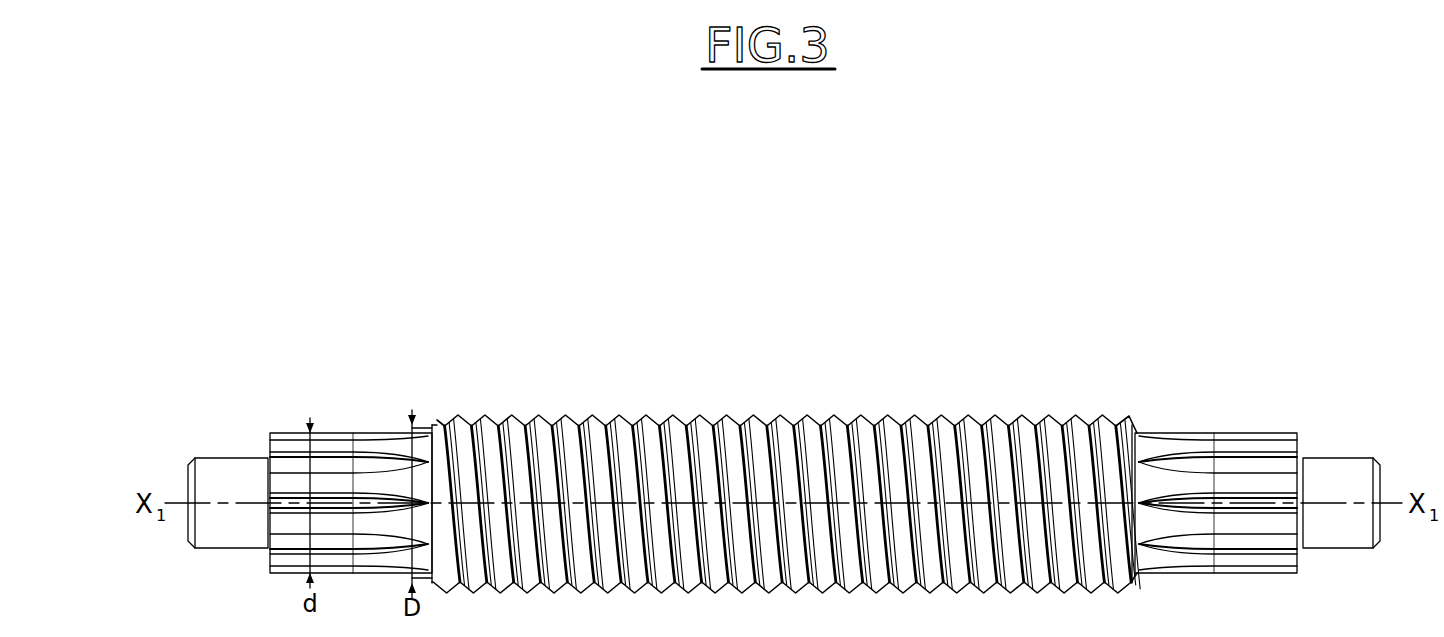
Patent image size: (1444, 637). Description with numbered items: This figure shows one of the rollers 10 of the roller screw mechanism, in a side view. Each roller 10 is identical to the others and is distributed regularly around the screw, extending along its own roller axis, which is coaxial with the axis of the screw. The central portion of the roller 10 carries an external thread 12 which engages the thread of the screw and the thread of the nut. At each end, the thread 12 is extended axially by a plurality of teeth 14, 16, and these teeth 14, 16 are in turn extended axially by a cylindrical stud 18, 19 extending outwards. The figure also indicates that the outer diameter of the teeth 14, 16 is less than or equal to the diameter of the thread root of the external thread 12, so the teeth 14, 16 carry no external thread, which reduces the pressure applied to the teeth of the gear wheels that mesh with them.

The roller 10 is at (1227, 330).
The external thread 12 is at (740, 421).
The teeth 14 is at (343, 441).
The teeth 16 is at (1153, 438).
The cylindrical stud 18 is at (221, 462).
The cylindrical stud 19 is at (1340, 462).